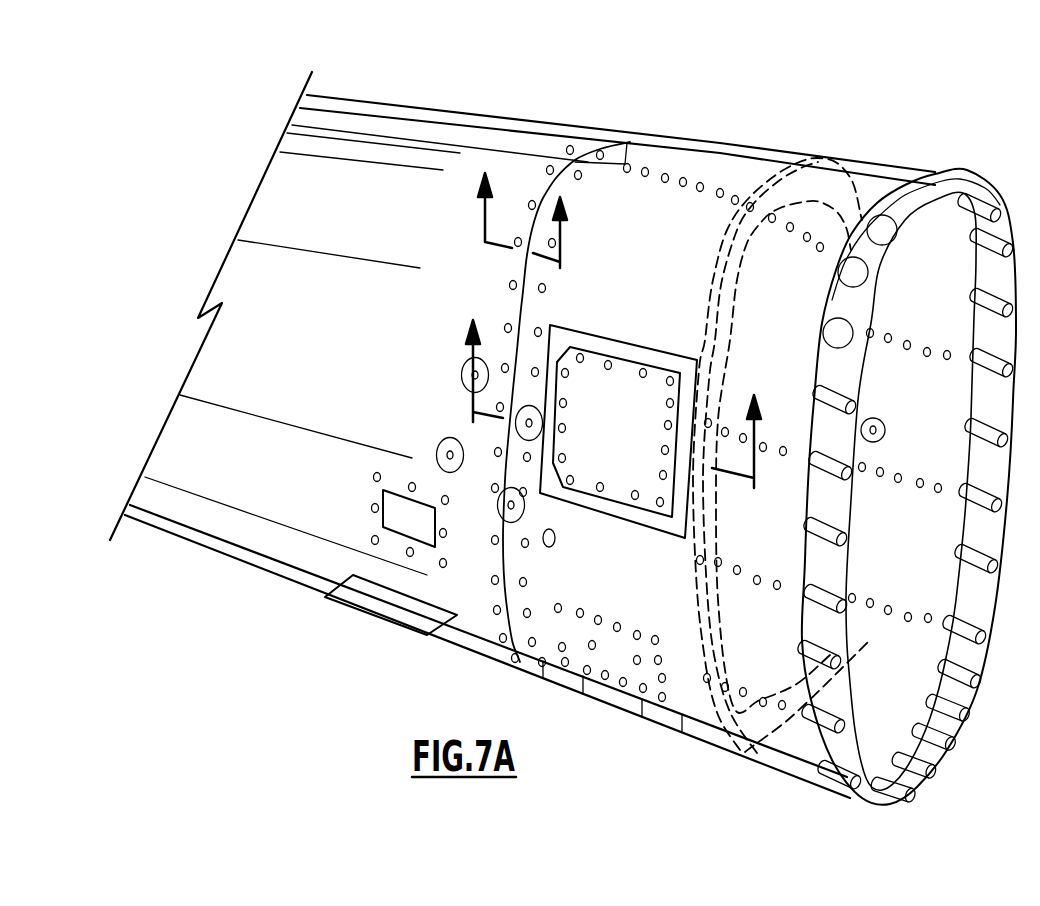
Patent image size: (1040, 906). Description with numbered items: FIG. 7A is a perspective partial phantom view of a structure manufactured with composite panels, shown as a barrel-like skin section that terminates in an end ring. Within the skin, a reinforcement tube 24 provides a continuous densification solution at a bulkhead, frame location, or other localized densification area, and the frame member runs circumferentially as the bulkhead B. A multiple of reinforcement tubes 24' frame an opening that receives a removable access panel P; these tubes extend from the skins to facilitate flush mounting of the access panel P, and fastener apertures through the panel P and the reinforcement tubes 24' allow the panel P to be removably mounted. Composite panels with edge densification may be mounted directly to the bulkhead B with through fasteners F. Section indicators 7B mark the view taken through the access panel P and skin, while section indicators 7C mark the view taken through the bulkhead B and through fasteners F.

The reinforcement tube 24 is at (563, 435).
The bulkhead B is at (613, 170).
The reinforcement tube 24' is at (618, 408).
The through fastener F is at (648, 372).
The access panel P is at (563, 538).
The section line 7B is at (615, 389).
The section line 7C is at (523, 220).